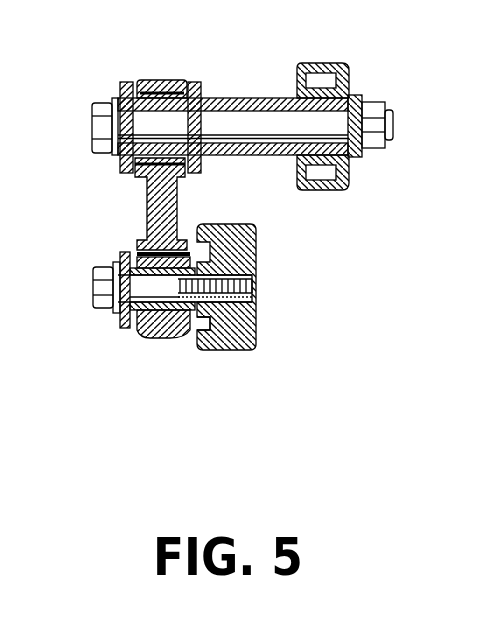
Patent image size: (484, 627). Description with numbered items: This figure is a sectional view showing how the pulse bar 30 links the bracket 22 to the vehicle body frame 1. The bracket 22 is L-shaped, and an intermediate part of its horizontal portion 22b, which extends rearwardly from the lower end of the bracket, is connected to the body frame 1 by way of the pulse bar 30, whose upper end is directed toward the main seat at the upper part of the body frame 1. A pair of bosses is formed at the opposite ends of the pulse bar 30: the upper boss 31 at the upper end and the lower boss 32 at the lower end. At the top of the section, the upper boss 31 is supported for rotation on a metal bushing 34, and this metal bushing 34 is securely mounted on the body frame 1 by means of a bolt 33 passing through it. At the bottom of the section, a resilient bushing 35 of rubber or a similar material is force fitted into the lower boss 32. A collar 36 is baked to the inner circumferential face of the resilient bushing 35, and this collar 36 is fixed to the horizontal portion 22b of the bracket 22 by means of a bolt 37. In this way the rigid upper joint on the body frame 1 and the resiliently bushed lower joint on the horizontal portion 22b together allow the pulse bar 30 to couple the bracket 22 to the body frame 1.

The body frame 1 is at (333, 64).
The bracket 22 is at (258, 259).
The horizontal portion 22b is at (257, 328).
The pulse bar 30 is at (147, 207).
The upper boss 31 is at (165, 80).
The lower boss 32 is at (165, 338).
The bolt 33 is at (248, 120).
The metal bushing 34 is at (137, 82).
The resilient bushing 35 is at (128, 326).
The collar 36 is at (180, 338).
The bolt 37 is at (97, 290).